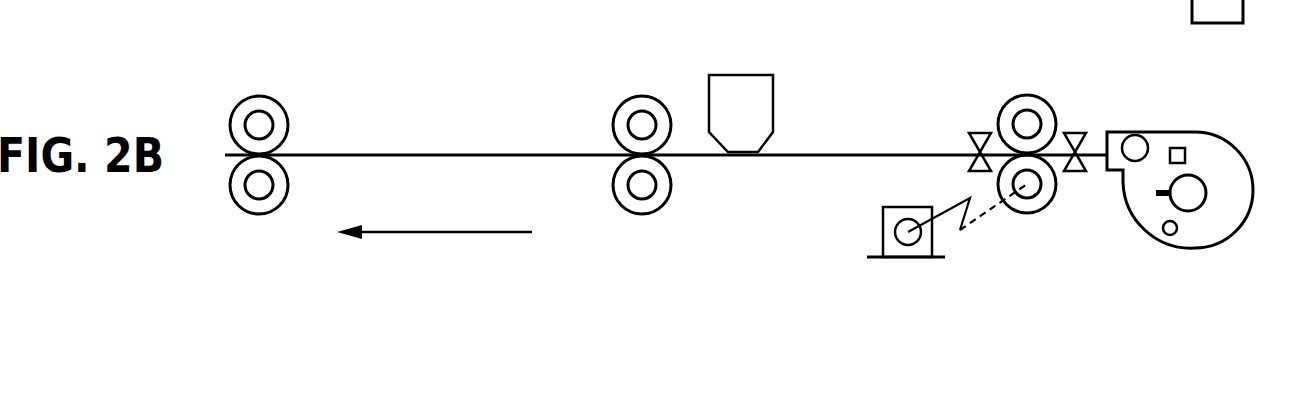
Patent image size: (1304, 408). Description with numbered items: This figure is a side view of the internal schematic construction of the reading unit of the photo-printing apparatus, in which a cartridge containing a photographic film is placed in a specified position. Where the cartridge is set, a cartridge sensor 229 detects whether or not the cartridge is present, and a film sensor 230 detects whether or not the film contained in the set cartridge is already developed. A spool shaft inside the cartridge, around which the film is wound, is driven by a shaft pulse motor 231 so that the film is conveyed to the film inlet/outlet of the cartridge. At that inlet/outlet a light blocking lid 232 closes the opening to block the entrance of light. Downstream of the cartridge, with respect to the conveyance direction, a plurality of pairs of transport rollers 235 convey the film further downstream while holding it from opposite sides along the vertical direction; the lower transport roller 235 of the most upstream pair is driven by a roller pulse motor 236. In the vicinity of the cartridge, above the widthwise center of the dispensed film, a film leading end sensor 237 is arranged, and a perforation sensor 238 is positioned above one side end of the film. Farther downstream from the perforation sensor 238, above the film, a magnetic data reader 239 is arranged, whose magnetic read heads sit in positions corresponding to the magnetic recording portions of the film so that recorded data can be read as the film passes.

The cartridge sensor 229 is at (1180, 148).
The film sensor 230 is at (1175, 237).
The shaft pulse motor 231 is at (1192, 12).
The light blocking lid 232 is at (1124, 143).
The transport rollers 235 is at (263, 106).
The roller pulse motor 236 is at (918, 258).
The film leading end sensor 237 is at (1075, 172).
The perforation sensor 238 is at (978, 133).
The magnetic data reader 239 is at (737, 92).